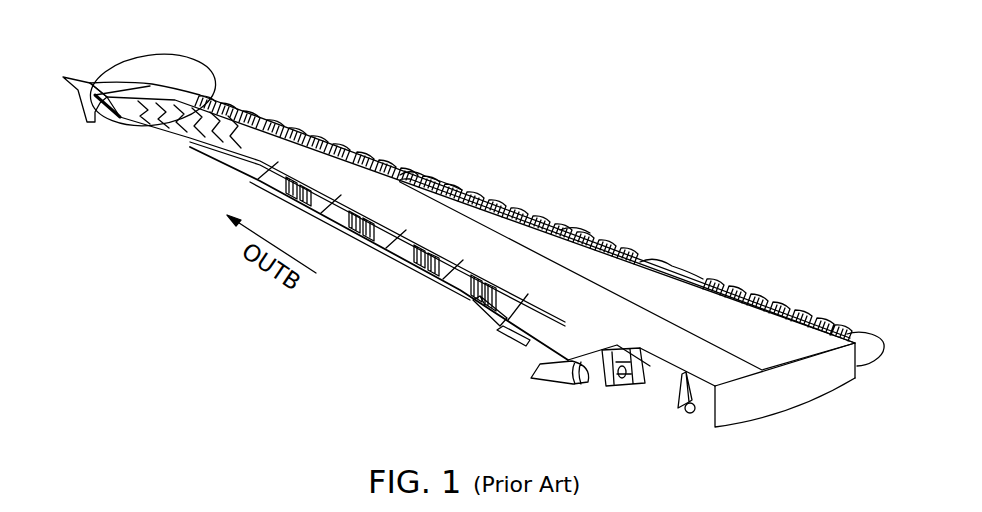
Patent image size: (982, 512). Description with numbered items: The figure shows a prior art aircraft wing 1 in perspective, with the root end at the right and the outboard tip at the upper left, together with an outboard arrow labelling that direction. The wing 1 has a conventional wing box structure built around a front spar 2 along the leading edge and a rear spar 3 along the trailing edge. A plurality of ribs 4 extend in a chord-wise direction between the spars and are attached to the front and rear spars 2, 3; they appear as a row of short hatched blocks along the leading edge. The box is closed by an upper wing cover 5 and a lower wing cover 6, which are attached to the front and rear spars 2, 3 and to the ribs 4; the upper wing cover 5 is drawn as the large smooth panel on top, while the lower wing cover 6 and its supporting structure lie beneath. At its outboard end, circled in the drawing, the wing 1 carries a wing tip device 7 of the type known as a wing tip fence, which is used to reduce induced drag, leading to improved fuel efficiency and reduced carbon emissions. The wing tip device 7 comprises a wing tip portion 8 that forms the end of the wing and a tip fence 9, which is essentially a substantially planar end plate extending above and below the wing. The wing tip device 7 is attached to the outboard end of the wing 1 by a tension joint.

The aircraft wing 1 is at (641, 149).
The front spar 2 is at (858, 362).
The rear spar 3 is at (700, 396).
The ribs 4 is at (347, 145).
The upper wing cover 5 is at (352, 172).
The lower wing cover 6 is at (373, 267).
The wing tip device 7 is at (128, 92).
The wing tip portion 8 is at (122, 102).
The tip fence 9 is at (78, 92).